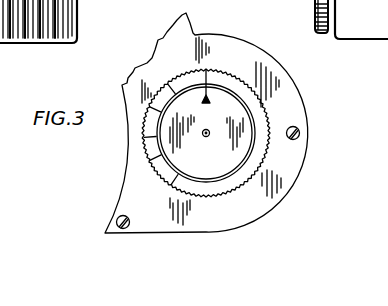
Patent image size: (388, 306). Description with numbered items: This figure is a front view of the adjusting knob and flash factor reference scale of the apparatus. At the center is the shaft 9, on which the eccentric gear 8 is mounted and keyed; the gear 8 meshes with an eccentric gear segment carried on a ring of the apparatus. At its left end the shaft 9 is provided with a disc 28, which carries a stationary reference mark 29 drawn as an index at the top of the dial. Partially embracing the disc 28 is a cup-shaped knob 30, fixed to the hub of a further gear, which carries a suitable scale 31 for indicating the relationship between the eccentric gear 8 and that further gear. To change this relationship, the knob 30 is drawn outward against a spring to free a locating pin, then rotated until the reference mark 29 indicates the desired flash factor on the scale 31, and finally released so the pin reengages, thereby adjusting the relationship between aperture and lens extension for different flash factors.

The eccentric gear 8 is at (125, 142).
The shaft 9 is at (210, 135).
The disc 28 is at (239, 117).
The stationary reference mark 29 is at (210, 96).
The cup-shaped knob 30 is at (217, 71).
The scale 31 is at (152, 110).